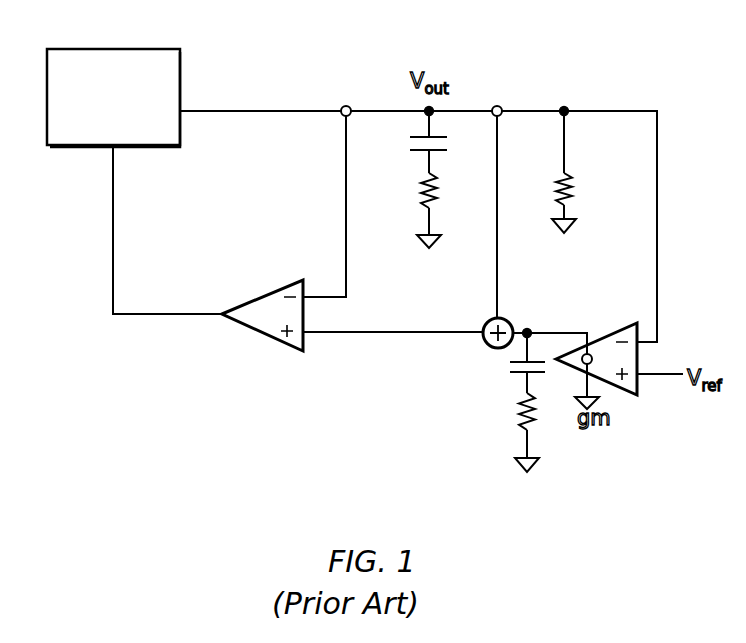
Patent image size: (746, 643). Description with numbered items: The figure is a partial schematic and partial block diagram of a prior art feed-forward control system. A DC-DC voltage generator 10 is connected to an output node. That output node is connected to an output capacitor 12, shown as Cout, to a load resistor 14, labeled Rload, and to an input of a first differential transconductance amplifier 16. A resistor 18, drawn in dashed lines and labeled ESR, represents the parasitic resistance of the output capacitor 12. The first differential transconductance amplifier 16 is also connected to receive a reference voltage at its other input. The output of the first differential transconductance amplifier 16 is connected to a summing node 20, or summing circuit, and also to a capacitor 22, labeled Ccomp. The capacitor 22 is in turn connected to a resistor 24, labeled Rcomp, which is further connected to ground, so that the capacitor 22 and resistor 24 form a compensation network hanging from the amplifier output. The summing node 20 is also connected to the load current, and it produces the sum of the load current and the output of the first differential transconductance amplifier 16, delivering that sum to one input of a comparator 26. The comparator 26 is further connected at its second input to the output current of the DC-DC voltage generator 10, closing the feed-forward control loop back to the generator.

The DC-DC voltage generator 10 is at (115, 49).
The output capacitor 12 is at (447, 140).
The load resistor Rload 14 is at (567, 172).
The first differential transconductance amplifier 16 is at (622, 392).
The resistor 18 is at (433, 172).
The summing node 20 is at (512, 322).
The capacitor 22 is at (543, 373).
The resistor 24 is at (535, 425).
The comparator 26 is at (255, 330).